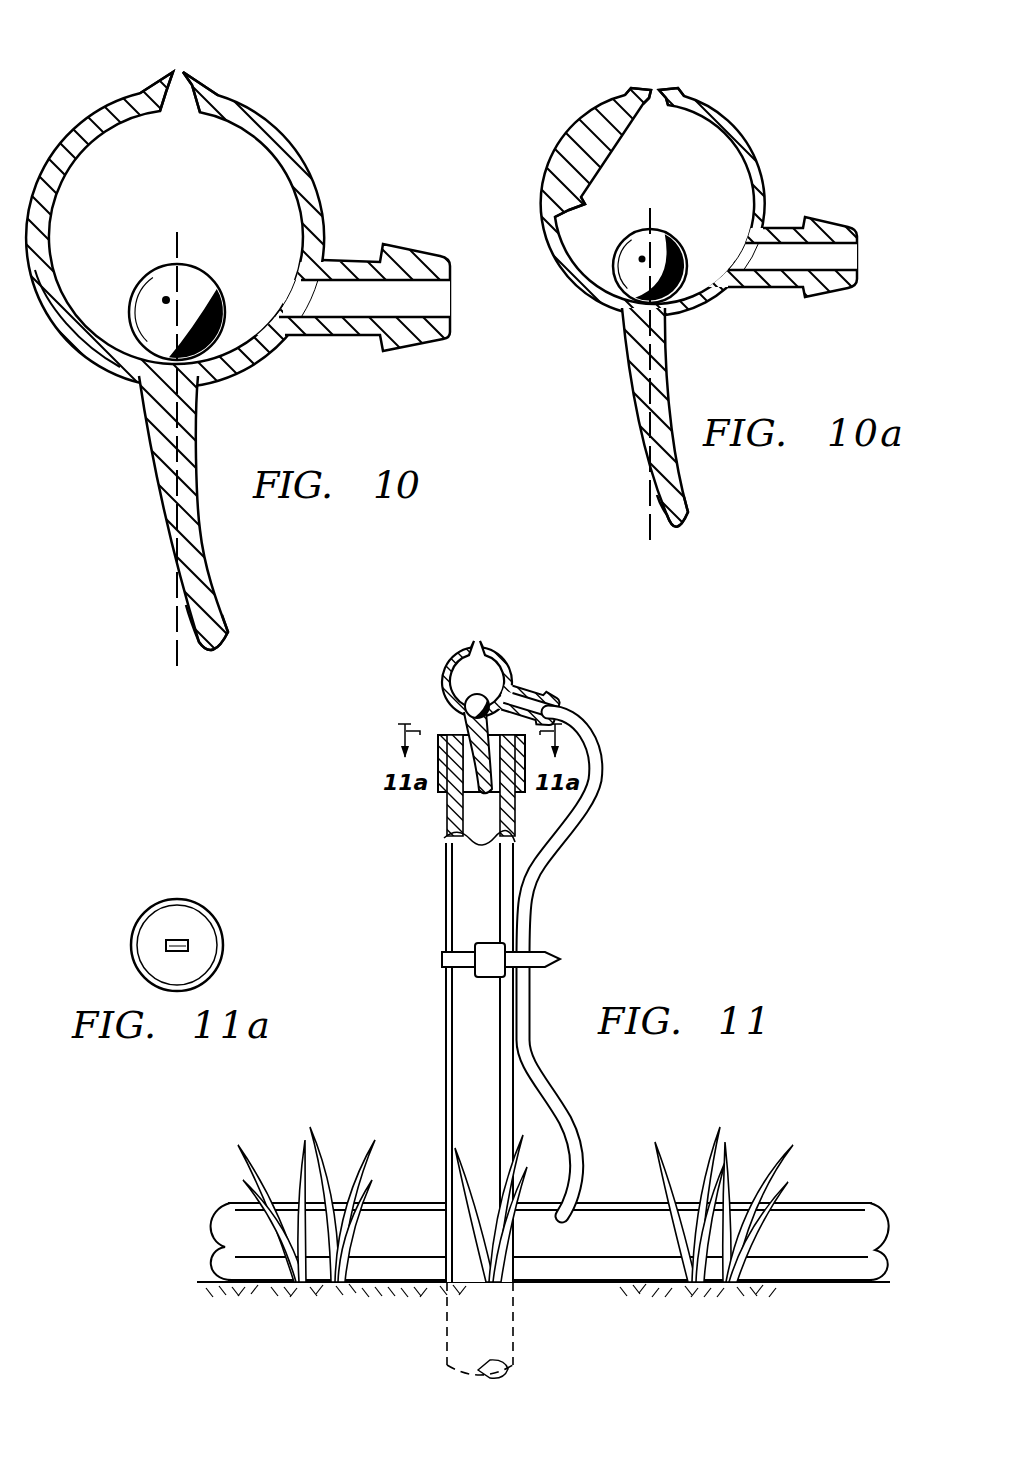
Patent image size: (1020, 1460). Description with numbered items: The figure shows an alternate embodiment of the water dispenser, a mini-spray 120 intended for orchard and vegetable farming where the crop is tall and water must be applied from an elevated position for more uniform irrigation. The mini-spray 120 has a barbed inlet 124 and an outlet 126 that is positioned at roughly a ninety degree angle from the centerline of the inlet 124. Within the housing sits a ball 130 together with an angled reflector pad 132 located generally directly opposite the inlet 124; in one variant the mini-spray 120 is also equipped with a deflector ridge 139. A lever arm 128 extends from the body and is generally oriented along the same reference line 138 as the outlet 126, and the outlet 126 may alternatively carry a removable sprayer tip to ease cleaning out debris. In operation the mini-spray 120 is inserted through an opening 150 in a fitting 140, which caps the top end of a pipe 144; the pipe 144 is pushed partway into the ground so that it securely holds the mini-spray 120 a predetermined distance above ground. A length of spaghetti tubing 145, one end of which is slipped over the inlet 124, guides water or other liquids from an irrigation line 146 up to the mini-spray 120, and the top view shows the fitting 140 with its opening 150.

In FIG. 10, the mini-spray 120 is at (510, 730).
In FIG. 10A, the mini-spray 120 is at (510, 730).
In FIG. 11, the mini-spray 120 is at (515, 641).
In FIG. 10, the inlet 124 is at (428, 247).
In FIG. 10A, the inlet 124 is at (831, 214).
In FIG. 10, the outlet 126 is at (168, 68).
In FIG. 10A, the outlet 126 is at (645, 84).
In FIG. 10, the lever arm 128 is at (212, 583).
In FIG. 10A, the lever arm 128 is at (690, 503).
In FIG. 10, the ball 130 is at (195, 267).
In FIG. 10A, the ball 130 is at (672, 241).
In FIG. 10, the angled reflector pad 132 is at (66, 256).
In FIG. 10, the reference line 138 is at (181, 424).
In FIG. 10A, the reference line 138 is at (668, 383).
In FIG. 10A, the deflector ridge 139 is at (583, 195).
In FIG. 11A, the fitting 140 is at (130, 892).
In FIG. 11, the pipe 144 is at (450, 813).
In FIG. 11, the spaghetti tubing 145 is at (567, 838).
In FIG. 11, the irrigation line 146 is at (610, 1203).
In FIG. 11A, the opening 150 is at (180, 938).